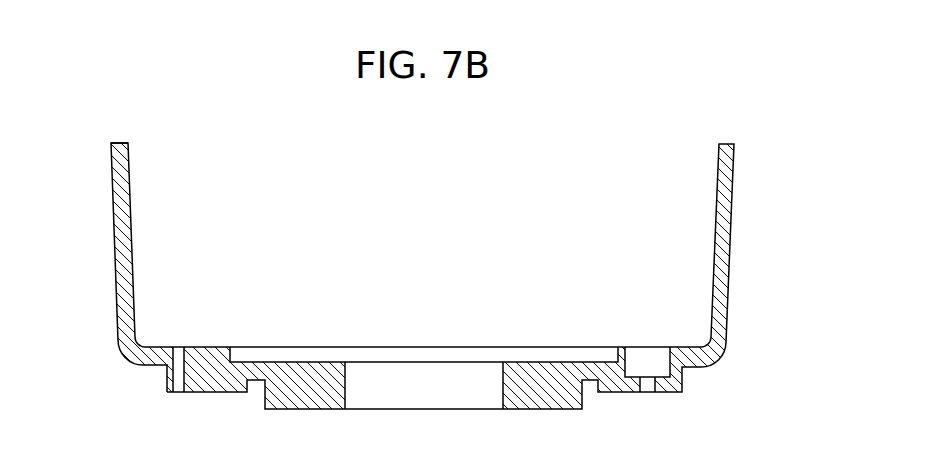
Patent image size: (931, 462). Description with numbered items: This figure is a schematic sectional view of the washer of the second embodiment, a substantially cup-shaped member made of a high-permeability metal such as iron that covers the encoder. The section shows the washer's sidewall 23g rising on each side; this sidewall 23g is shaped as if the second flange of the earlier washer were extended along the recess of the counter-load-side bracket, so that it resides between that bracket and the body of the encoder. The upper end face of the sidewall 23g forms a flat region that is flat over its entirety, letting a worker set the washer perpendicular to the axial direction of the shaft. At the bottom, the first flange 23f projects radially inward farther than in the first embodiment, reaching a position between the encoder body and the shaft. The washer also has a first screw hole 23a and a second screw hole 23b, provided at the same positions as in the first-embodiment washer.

The sidewall 23g is at (112, 212).
The second screw hole 23b is at (175, 348).
The first flange 23f is at (297, 362).
The first screw hole 23a is at (652, 377).